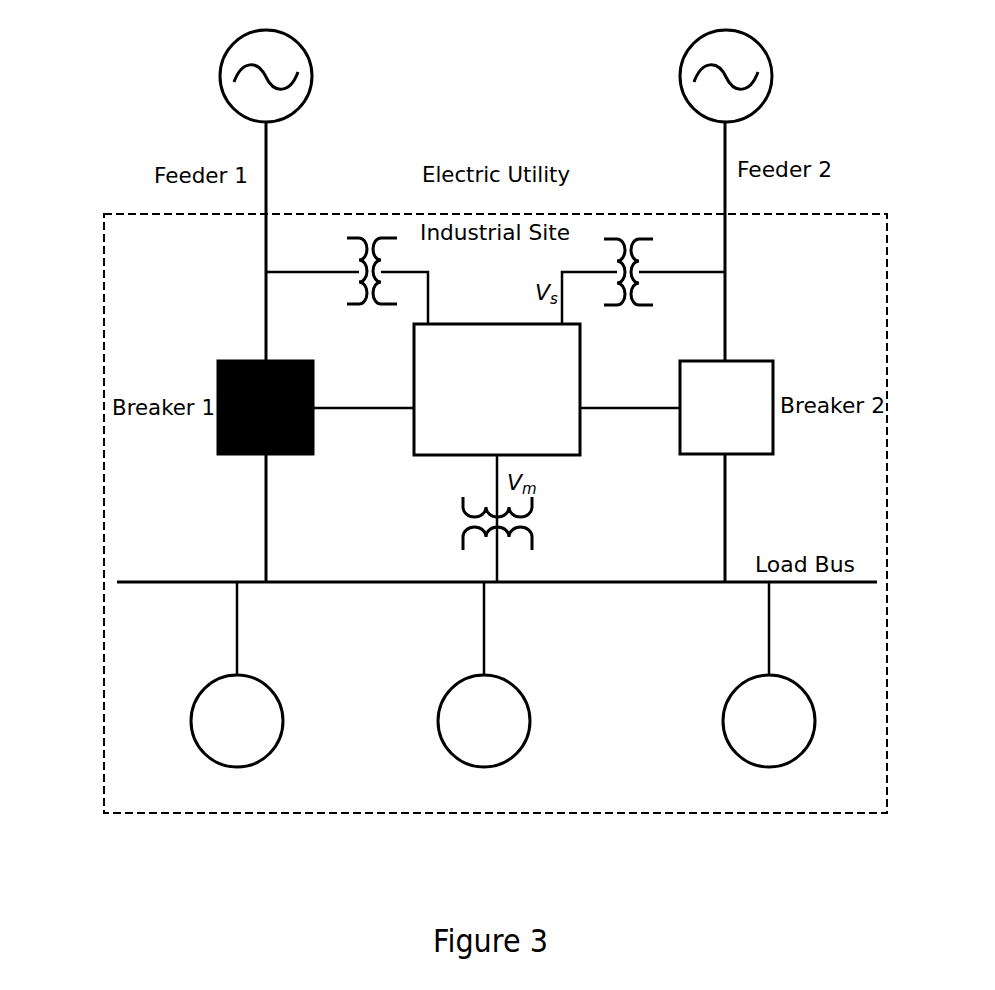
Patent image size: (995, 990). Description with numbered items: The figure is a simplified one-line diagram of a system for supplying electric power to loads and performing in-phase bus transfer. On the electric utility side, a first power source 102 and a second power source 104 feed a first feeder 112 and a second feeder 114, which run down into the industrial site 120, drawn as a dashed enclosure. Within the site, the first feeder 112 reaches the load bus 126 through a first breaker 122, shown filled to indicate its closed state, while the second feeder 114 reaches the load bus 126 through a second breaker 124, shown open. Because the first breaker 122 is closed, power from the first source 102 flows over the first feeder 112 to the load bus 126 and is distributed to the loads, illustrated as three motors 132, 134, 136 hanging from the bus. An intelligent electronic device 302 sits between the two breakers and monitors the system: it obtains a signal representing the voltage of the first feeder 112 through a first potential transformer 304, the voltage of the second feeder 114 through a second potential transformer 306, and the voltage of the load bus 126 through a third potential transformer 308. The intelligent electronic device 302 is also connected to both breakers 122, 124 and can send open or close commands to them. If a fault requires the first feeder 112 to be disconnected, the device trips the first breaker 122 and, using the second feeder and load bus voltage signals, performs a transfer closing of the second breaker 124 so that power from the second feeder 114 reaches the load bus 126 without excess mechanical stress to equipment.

The first power source 102 is at (219, 78).
The second power source 104 is at (680, 78).
The first feeder 112 is at (268, 178).
The second feeder 114 is at (724, 170).
The industrial site 120 is at (104, 262).
The first breaker 122 is at (218, 437).
The second breaker 124 is at (773, 437).
The load bus 126 is at (356, 581).
The motor 132 is at (284, 720).
The motor 134 is at (438, 720).
The motor 136 is at (723, 722).
The intelligent electronic device 302 is at (580, 457).
The first potential transformer 304 is at (371, 307).
The second potential transformer 306 is at (633, 307).
The third potential transformer 308 is at (464, 522).